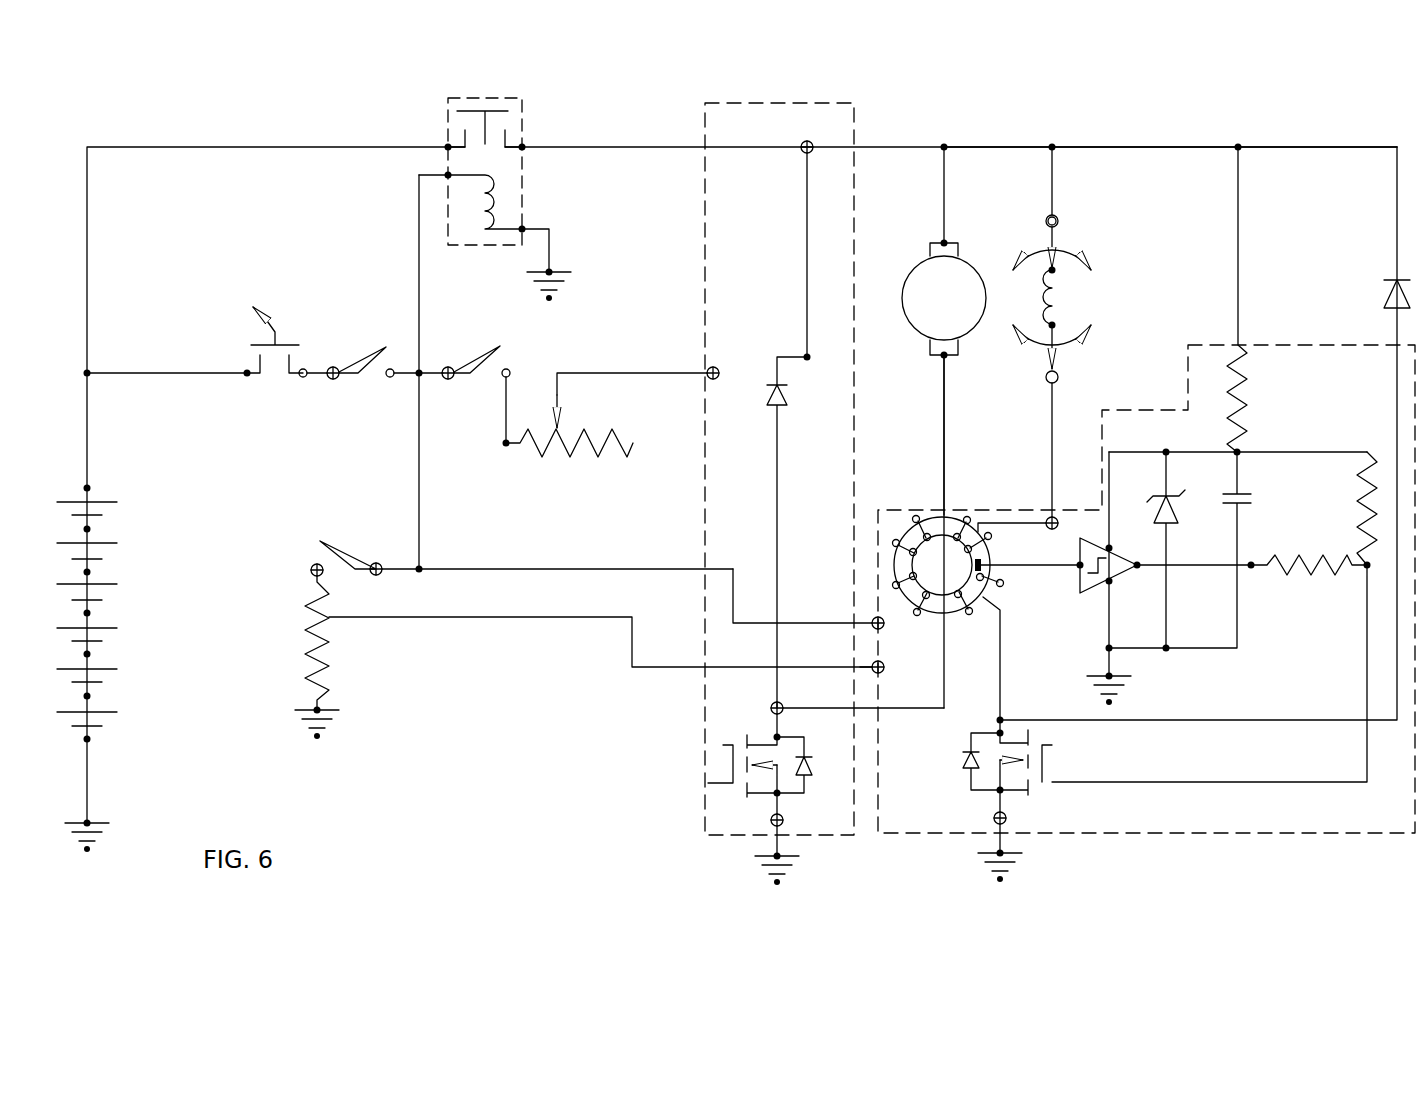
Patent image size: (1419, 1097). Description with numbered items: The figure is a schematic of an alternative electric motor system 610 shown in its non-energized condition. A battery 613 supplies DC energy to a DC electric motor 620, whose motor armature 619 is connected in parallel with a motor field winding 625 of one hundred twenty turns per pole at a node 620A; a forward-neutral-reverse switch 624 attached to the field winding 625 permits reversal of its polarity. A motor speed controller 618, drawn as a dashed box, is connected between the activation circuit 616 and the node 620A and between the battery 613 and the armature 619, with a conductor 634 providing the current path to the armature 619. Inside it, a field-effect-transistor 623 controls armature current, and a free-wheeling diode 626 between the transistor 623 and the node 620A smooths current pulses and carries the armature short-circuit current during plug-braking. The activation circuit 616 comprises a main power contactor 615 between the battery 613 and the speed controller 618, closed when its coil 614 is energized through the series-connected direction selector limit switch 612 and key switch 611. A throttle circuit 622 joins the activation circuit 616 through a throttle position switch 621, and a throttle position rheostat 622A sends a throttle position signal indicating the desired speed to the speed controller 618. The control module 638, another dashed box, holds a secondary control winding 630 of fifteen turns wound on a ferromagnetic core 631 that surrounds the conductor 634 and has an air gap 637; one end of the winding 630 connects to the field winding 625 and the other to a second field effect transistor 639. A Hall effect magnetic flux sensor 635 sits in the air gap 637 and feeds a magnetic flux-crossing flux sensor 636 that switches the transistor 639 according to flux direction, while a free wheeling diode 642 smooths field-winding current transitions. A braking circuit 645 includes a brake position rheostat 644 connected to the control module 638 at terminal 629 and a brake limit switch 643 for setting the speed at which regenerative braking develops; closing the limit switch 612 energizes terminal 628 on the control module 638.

The electric motor system 610 is at (233, 133).
The key switch 611 is at (288, 303).
The direction selector limit switch 612 is at (372, 342).
The battery 613 is at (98, 492).
The coil 614 is at (503, 215).
The main power contactor 615 is at (456, 199).
The activation circuit 616 is at (265, 274).
The motor speed controller 618 is at (866, 100).
The motor armature 619 is at (920, 262).
The DC electric motor 620 is at (1204, 390).
The node 620A is at (1118, 133).
The throttle position switch 621 is at (485, 343).
The throttle circuit 622 is at (572, 355).
The throttle position rheostat 622A is at (563, 463).
The field-effect-transistor 623 is at (710, 780).
The forward-neutral-reverse switch 624 is at (1105, 332).
The motor field winding 625 is at (1068, 296).
The free-wheeling diode 626 is at (770, 382).
The terminal 628 is at (870, 617).
The terminal 629 is at (860, 672).
The secondary control winding 630 is at (970, 520).
The ferromagnetic core 631 is at (901, 559).
The conductor 634 is at (935, 460).
The Hall effect magnetic flux sensor 635 is at (984, 572).
The magnetic flux-crossing flux sensor 636 is at (1132, 577).
The air gap 637 is at (965, 566).
The control module 638 is at (1233, 838).
The field effect transistor 639 is at (1058, 760).
The free wheeling diode 642 is at (1382, 285).
The brake limit switch 643 is at (318, 522).
The brake position rheostat 644 is at (350, 625).
The braking circuit 645 is at (298, 622).